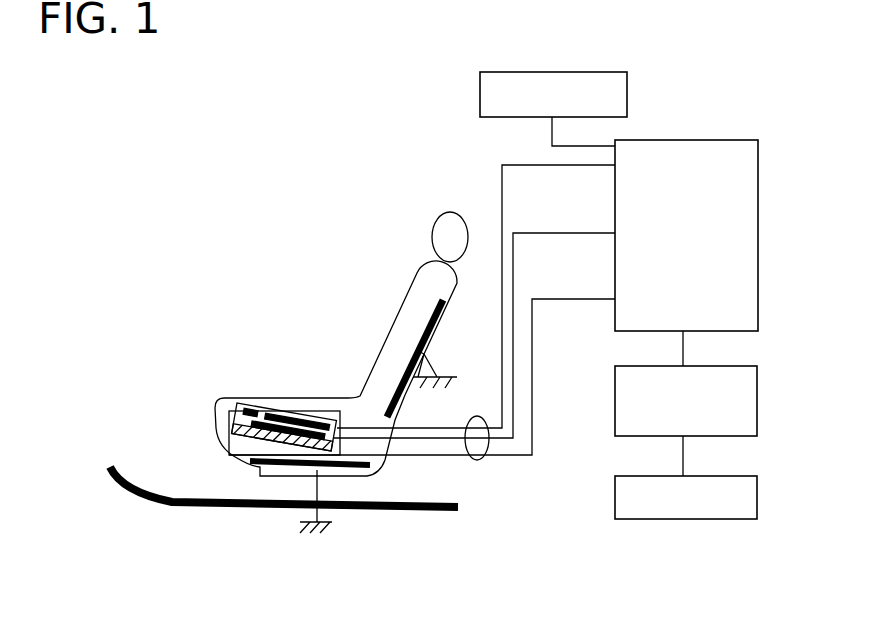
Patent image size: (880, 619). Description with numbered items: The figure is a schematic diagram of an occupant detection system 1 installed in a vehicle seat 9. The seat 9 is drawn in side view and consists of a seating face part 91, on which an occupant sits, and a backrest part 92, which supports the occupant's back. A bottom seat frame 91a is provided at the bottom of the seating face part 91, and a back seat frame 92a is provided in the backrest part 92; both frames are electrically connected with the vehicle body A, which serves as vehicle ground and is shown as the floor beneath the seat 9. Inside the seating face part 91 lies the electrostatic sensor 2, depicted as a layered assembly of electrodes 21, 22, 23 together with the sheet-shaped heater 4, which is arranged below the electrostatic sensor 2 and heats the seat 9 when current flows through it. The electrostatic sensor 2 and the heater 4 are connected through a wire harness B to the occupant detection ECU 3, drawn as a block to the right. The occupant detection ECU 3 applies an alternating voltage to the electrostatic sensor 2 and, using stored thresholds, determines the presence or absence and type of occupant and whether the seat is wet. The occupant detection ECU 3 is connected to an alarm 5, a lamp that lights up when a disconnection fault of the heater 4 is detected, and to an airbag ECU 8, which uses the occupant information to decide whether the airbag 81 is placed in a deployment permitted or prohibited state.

The occupant detection system 1 is at (302, 192).
The electrostatic sensor 2 is at (265, 410).
The main electrode 21 is at (314, 416).
The sub electrode 22 is at (244, 406).
The guard electrode 23 is at (232, 412).
The occupant detection ECU 3 is at (677, 139).
The heater 4 is at (231, 432).
The alarm 5 is at (532, 72).
The airbag ECU 8 is at (615, 392).
The airbag 81 is at (615, 493).
The seat 9 is at (367, 260).
The seating face part 91 is at (300, 400).
The bottom seat frame 91a is at (246, 462).
The backrest part 92 is at (390, 323).
The back seat frame 92a is at (430, 339).
The vehicle body A is at (122, 462).
The wire harness B is at (480, 459).